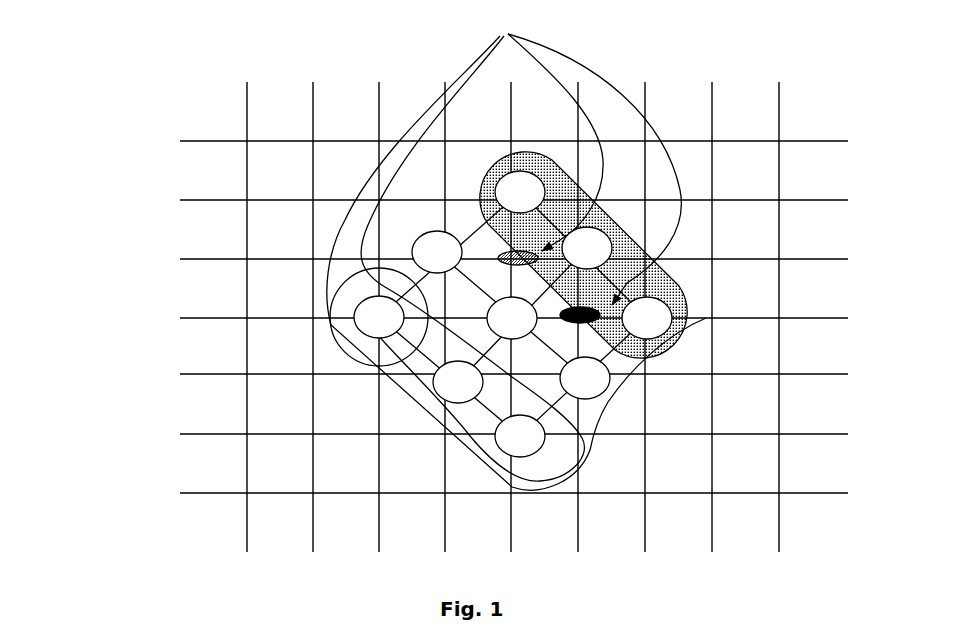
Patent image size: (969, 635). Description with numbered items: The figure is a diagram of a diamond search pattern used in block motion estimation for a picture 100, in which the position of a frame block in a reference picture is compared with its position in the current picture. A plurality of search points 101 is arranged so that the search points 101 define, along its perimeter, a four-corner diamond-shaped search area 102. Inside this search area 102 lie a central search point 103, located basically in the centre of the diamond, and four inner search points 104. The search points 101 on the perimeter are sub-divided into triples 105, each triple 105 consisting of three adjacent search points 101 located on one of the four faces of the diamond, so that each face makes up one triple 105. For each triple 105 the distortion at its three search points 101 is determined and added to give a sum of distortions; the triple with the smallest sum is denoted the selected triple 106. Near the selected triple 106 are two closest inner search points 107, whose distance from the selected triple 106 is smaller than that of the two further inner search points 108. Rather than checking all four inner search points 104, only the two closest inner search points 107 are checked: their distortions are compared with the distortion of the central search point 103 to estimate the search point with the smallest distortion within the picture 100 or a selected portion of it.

The picture 100 is at (96, 105).
The search points 101 is at (513, 314).
The diamond-shaped search area 102 is at (622, 368).
The central search point 103 is at (512, 318).
The inner search points 104 is at (516, 252).
The 3-tuple 105 is at (329, 299).
The selected 3-tuple 106 is at (472, 139).
The two closest inner search points 107 is at (542, 252).
The two further inner search points 108 is at (509, 379).